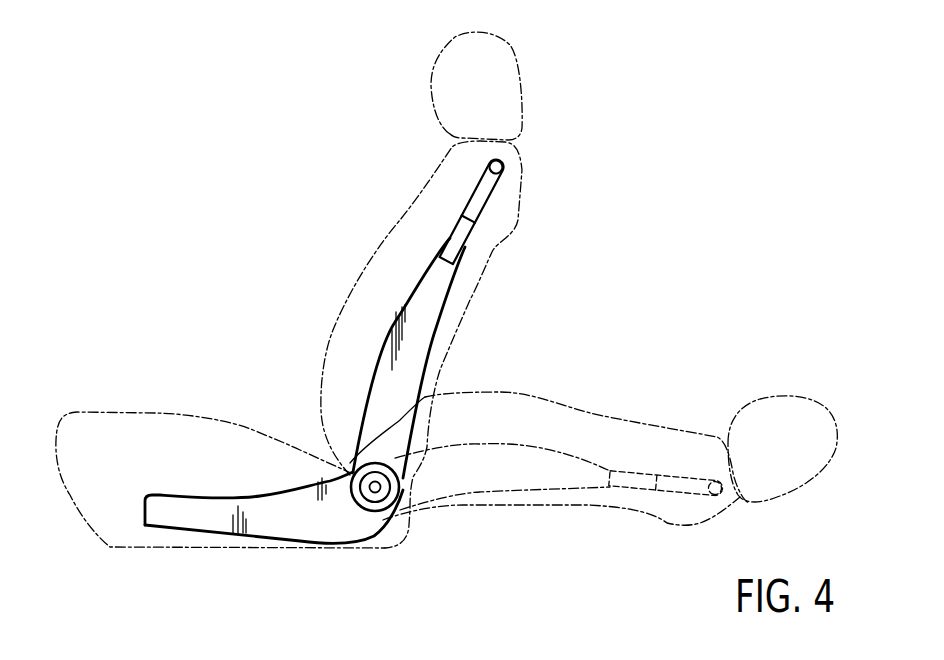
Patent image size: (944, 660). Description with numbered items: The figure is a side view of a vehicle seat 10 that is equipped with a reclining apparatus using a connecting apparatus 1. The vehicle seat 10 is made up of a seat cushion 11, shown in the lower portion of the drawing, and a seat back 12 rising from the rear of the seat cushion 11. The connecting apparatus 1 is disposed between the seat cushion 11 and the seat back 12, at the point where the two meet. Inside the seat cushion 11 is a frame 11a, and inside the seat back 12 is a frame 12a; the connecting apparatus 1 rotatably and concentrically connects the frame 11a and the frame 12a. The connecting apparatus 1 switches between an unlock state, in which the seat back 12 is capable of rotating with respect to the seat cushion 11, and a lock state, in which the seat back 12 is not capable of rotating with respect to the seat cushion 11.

The connecting apparatus 1 is at (395, 490).
The vehicle seat 10 is at (297, 235).
The seat cushion 11 is at (164, 433).
The frame of the seat cushion 11a is at (218, 513).
The seat back 12 is at (388, 258).
The frame of the seat back 12a is at (378, 418).